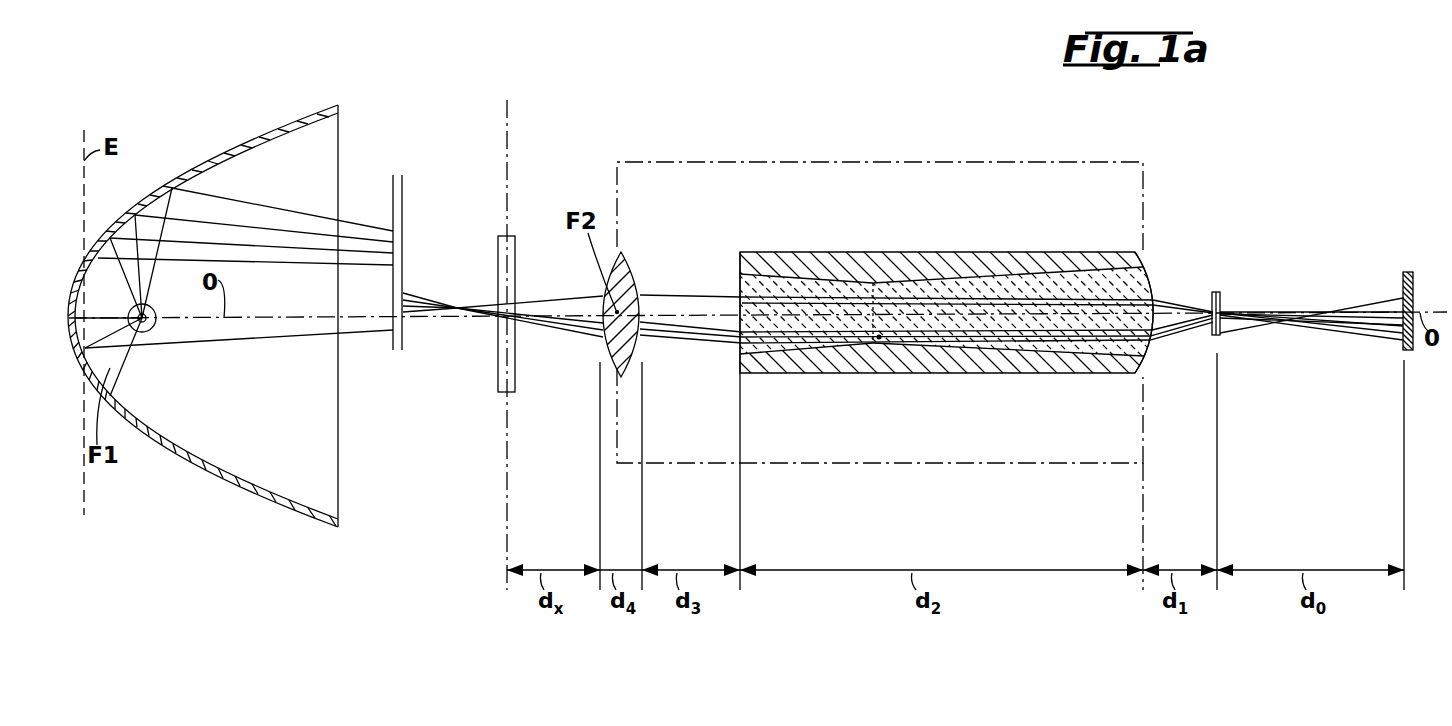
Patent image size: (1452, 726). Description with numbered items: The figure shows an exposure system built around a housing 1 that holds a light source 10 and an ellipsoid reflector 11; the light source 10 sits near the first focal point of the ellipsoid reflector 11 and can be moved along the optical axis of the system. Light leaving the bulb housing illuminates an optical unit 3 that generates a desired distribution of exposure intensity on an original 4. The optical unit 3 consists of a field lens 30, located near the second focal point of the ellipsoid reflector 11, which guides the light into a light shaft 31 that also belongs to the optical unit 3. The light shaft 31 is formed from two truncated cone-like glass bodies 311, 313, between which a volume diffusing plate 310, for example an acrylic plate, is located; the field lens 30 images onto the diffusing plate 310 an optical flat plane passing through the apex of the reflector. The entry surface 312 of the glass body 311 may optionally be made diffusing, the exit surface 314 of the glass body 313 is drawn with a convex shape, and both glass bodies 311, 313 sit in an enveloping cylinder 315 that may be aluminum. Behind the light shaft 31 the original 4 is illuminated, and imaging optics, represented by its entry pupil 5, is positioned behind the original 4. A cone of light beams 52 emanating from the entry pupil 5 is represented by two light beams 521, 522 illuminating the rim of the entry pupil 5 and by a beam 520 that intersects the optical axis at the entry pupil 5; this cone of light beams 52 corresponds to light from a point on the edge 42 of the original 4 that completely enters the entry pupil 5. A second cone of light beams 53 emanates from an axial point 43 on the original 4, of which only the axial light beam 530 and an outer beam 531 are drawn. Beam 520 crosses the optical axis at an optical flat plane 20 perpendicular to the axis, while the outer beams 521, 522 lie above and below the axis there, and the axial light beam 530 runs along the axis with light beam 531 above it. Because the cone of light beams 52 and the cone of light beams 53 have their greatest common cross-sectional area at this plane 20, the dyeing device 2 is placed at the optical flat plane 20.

The housing 1 is at (203, 296).
The light source 10 is at (146, 331).
The ellipsoid reflector 11 is at (256, 135).
The dyeing device 2 is at (498, 243).
The optical flat plane 20 is at (508, 150).
The optical unit 3 is at (828, 150).
The field lens 30 is at (632, 253).
The light shaft 31 is at (941, 241).
The diffusing plate 310 is at (880, 341).
The glass body 311 is at (812, 287).
The entry surface 312 is at (739, 283).
The glass body 313 is at (1058, 273).
The exit surface 314 is at (1154, 273).
The cylinder 315 is at (876, 263).
The original 4 is at (1220, 293).
The point on the edge 42 is at (1219, 335).
The axial point 43 is at (1213, 297).
The entry pupil 5 is at (1415, 300).
The cone of light beams 52 is at (349, 237).
The beam 520 is at (257, 229).
The light beam 521 is at (324, 263).
The light beam 522 is at (306, 211).
The cone of light beams 53 is at (253, 338).
The axial light beam 530 is at (300, 322).
The outer beam 531 is at (1285, 315).